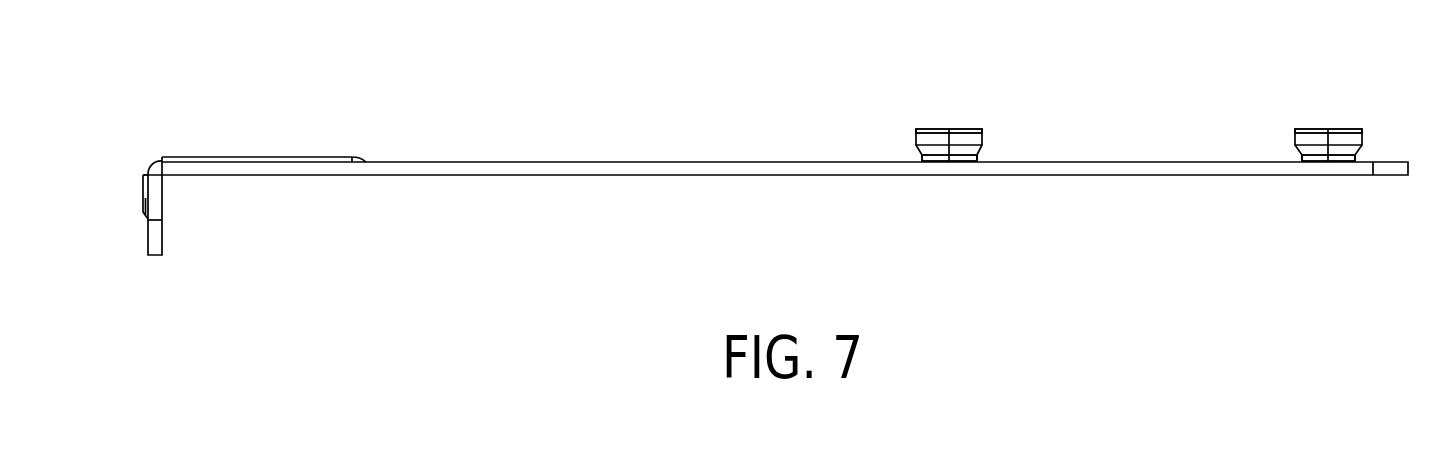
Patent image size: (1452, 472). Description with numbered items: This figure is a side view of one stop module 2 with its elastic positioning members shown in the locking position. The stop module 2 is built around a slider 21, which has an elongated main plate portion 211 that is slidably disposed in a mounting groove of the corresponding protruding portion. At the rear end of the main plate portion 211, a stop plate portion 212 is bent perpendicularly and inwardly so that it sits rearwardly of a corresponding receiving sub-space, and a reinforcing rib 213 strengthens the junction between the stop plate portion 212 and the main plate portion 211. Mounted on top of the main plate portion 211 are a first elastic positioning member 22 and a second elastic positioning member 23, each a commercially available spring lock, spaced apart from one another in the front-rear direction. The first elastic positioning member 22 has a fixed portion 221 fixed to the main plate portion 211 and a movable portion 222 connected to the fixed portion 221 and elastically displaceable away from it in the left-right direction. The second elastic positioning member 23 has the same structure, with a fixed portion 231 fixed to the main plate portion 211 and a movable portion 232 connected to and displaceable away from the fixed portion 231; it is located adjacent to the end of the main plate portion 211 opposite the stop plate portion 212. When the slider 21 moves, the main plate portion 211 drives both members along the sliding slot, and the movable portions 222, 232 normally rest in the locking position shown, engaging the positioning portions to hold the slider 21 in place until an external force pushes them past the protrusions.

The stop module 2 is at (148, 89).
The slider 21 is at (1182, 178).
The main plate portion 211 is at (630, 166).
The stop plate portion 212 is at (155, 238).
The reinforcing rib 213 is at (257, 155).
The first elastic positioning member 22 is at (916, 124).
The fixed portion 221 is at (922, 158).
The movable portion 222 is at (983, 138).
The second elastic positioning member 23 is at (1295, 124).
The fixed portion 231 is at (1302, 158).
The movable portion 232 is at (1363, 138).